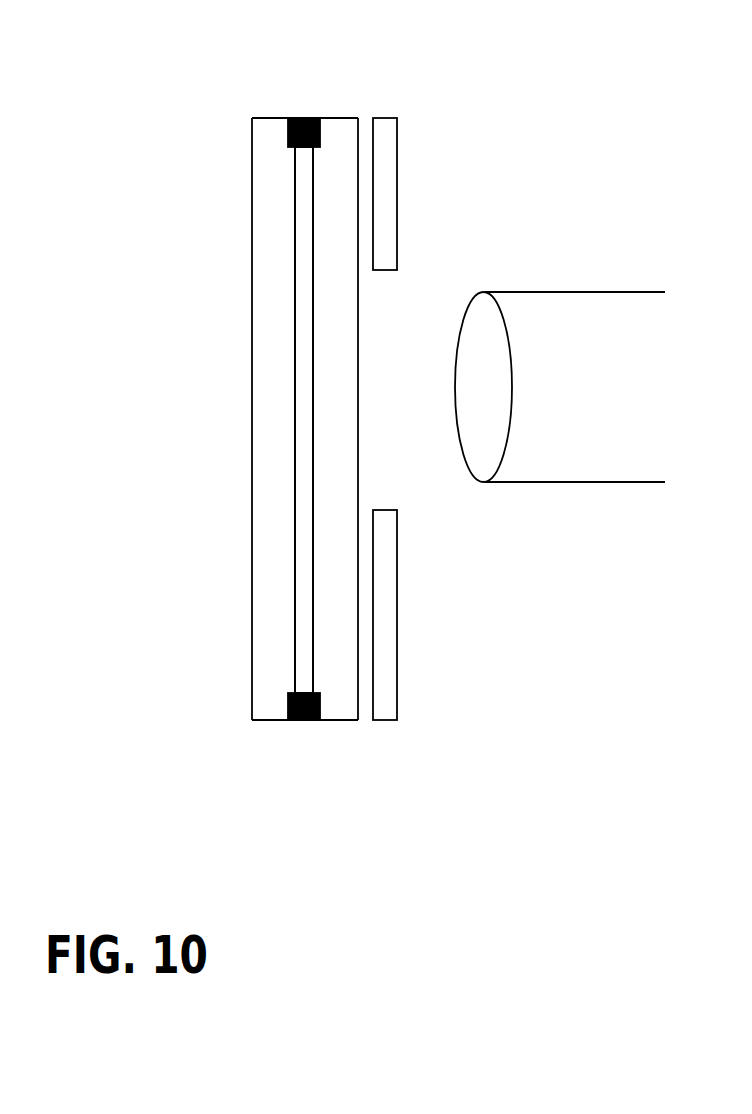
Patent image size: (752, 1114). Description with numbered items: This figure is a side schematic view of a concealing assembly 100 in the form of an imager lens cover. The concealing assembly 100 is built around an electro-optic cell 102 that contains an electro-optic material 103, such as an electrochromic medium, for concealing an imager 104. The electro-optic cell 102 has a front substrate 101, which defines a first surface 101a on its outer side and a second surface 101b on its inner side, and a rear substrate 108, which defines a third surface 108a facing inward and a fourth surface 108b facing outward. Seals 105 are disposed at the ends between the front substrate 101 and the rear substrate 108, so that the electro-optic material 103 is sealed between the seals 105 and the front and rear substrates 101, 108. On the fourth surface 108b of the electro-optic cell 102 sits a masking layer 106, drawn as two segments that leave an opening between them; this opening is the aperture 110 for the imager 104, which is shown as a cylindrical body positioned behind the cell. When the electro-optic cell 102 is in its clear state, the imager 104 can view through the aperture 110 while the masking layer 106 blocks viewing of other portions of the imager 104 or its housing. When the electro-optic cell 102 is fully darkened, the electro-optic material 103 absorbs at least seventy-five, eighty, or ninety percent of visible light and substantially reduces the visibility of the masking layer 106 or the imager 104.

The concealing assembly 100 is at (577, 138).
The front substrate 101 is at (218, 423).
The first surface 101a is at (252, 592).
The second surface 101b is at (293, 660).
The electro-optic cell 102 is at (337, 122).
The electro-optic material 103 is at (307, 493).
The imager 104 is at (588, 318).
The seals 105 is at (303, 117).
The masking layer 106 is at (387, 207).
The rear substrate 108 is at (420, 419).
The third surface 108a is at (315, 590).
The fourth surface 108b is at (358, 620).
The aperture 110 is at (378, 410).